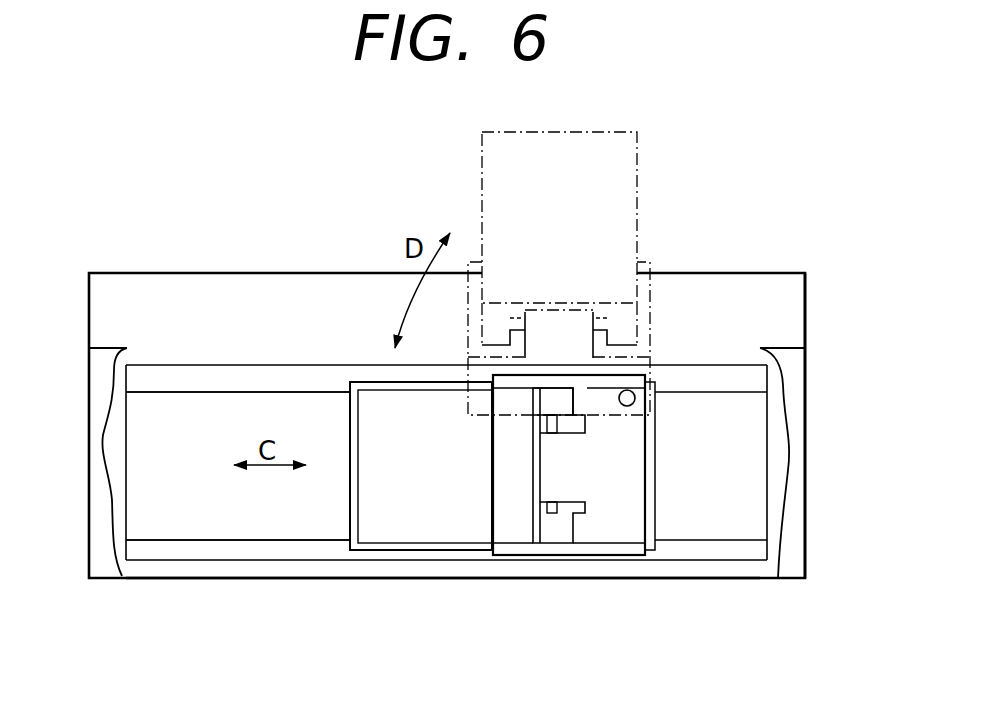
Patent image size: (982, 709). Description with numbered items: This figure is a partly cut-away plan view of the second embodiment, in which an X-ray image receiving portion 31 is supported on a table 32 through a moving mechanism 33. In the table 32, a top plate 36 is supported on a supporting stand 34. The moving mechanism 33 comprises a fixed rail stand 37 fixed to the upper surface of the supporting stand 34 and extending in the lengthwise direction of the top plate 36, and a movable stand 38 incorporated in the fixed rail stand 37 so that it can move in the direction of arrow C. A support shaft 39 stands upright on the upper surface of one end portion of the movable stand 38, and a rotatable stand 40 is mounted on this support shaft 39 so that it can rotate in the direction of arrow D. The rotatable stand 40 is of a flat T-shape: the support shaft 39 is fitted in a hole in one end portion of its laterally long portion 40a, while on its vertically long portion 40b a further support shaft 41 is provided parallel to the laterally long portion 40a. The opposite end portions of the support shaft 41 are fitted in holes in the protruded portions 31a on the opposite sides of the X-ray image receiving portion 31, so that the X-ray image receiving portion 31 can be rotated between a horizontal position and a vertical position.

The X-ray image receiving portion 31 is at (637, 150).
The protruded portions 31a is at (561, 400).
The table 32 is at (133, 270).
The moving mechanism 33 is at (330, 508).
The supporting stand 34 is at (757, 273).
The top plate 36 is at (105, 577).
The fixed rail stand 37 is at (220, 378).
The movable stand 38 is at (370, 388).
The support shaft 39 is at (630, 390).
The rotatable stand 40 is at (615, 548).
The laterally long portion 40a is at (634, 504).
The vertically long portion 40b is at (550, 458).
The support shaft 41 is at (553, 510).